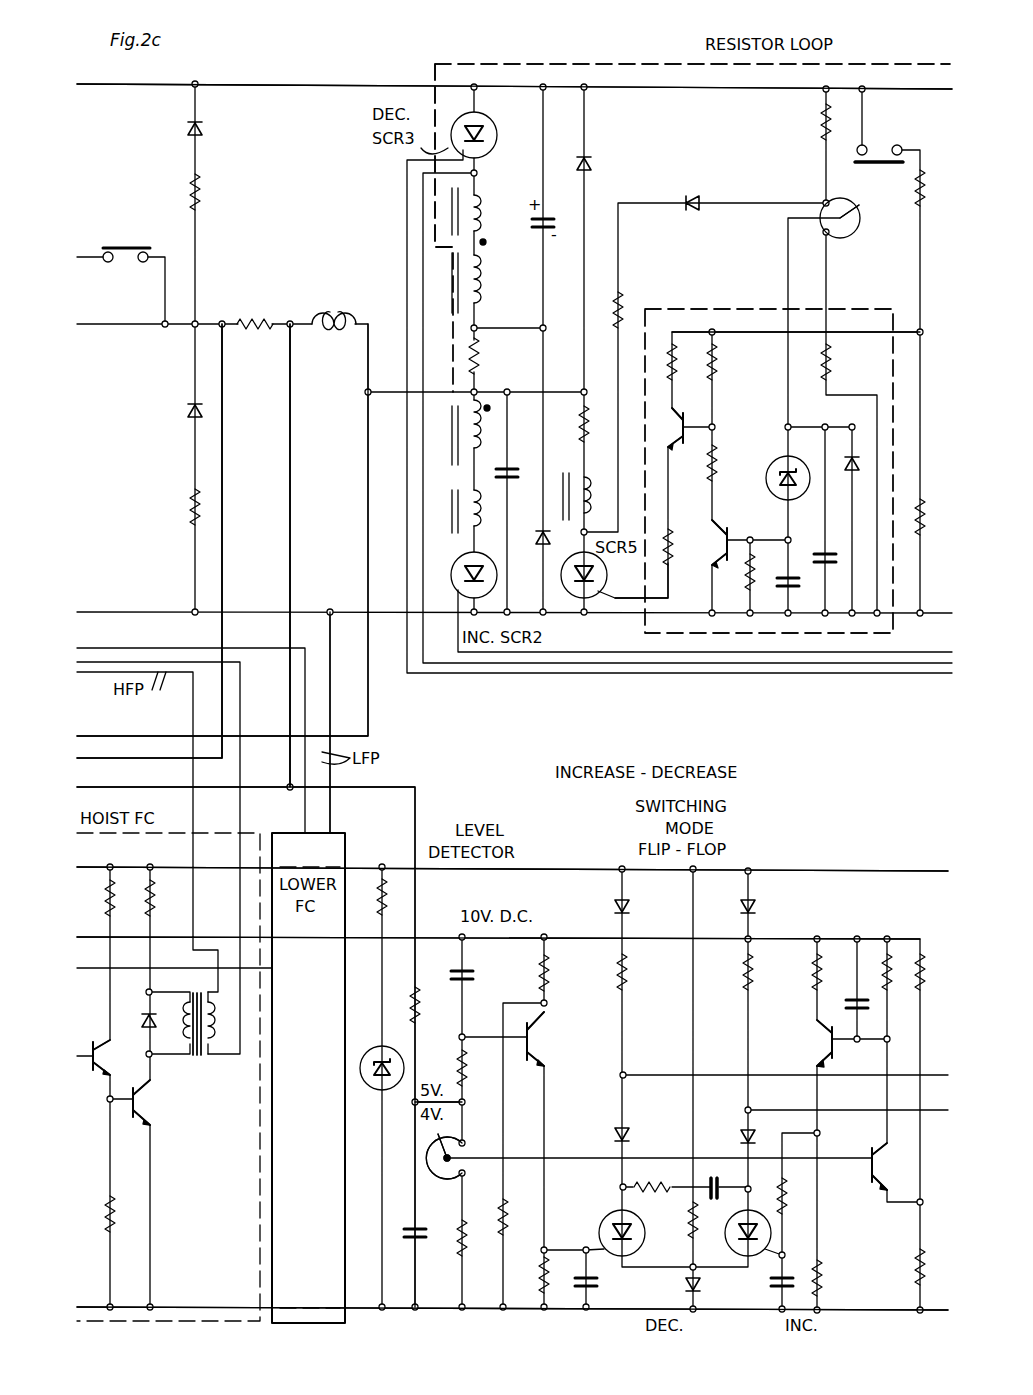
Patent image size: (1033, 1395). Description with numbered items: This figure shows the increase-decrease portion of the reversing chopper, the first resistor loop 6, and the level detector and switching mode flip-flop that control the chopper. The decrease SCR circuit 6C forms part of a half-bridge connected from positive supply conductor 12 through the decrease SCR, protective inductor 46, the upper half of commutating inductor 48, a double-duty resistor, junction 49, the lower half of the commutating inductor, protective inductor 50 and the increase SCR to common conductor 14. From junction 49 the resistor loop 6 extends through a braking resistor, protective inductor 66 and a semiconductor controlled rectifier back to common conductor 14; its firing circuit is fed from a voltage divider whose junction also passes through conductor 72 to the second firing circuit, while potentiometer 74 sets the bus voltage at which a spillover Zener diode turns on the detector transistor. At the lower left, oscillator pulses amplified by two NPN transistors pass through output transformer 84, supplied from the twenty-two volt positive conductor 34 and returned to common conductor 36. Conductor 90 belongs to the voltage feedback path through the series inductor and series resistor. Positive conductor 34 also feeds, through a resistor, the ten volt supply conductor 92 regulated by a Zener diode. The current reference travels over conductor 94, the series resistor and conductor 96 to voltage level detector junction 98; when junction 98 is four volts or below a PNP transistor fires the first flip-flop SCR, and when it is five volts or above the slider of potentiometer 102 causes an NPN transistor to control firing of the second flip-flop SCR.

The positive supply conductor 12 is at (316, 84).
The resistor loop 6 is at (480, 50).
The decrease SCR circuit 6C is at (378, 224).
The common conductor 14 is at (324, 612).
The positive conductor 34 is at (532, 869).
The common conductor 36 is at (470, 1309).
The protective inductor 46 is at (482, 212).
The commutating inductor 48 is at (452, 270).
The junction 49 is at (474, 392).
The protective inductor 50 is at (452, 518).
The protective inductor 66 is at (596, 492).
The conductor 72 is at (757, 332).
The potentiometer 74 is at (853, 232).
The output transformer 84 is at (192, 1054).
The conductor 90 is at (366, 496).
The ten volt supply conductor 92 is at (440, 937).
The conductor 94 is at (224, 388).
The conductor 96 is at (292, 406).
The voltage level detector junction 98 is at (462, 1102).
The potentiometer 102 is at (438, 1170).